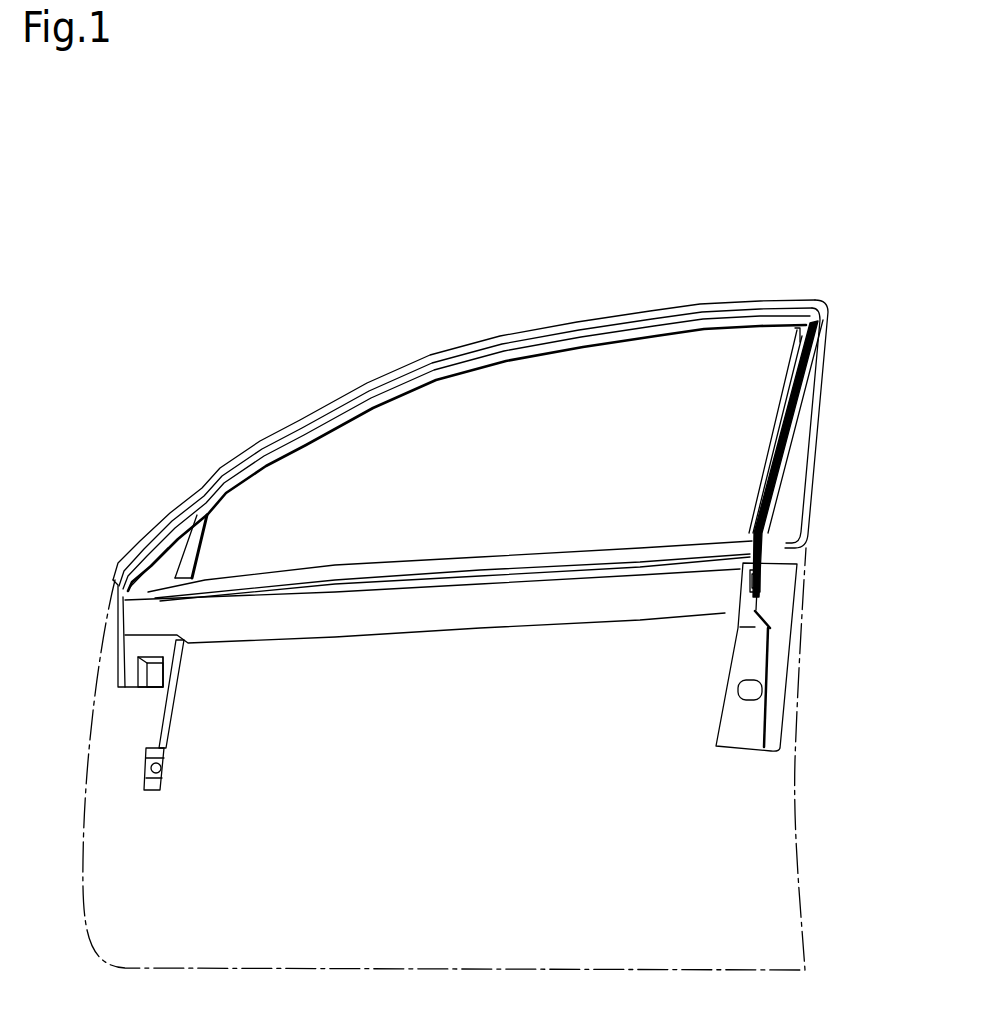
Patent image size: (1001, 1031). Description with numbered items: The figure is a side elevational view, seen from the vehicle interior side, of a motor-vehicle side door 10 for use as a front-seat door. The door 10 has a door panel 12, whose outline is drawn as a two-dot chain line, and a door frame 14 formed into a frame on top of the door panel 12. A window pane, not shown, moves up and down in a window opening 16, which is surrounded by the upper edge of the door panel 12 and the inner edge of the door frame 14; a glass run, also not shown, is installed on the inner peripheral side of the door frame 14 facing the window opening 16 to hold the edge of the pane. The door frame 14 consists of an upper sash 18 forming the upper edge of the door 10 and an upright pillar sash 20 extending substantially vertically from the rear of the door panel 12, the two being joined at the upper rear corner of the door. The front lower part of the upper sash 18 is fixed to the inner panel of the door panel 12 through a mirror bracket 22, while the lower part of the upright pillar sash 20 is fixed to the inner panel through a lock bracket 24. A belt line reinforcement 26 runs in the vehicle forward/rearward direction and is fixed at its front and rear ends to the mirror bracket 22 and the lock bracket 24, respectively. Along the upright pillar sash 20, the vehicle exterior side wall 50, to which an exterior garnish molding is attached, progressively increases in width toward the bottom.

The motor-vehicle side door 10 is at (237, 302).
The door panel 12 is at (777, 829).
The door frame 14 is at (574, 310).
The window opening 16 is at (424, 432).
The upper sash 18 is at (487, 352).
The upright pillar sash 20 is at (838, 366).
The mirror bracket 22 is at (147, 618).
The lock bracket 24 is at (752, 650).
The belt line reinforcement 26 is at (537, 598).
The vehicle exterior side wall 50 is at (806, 450).